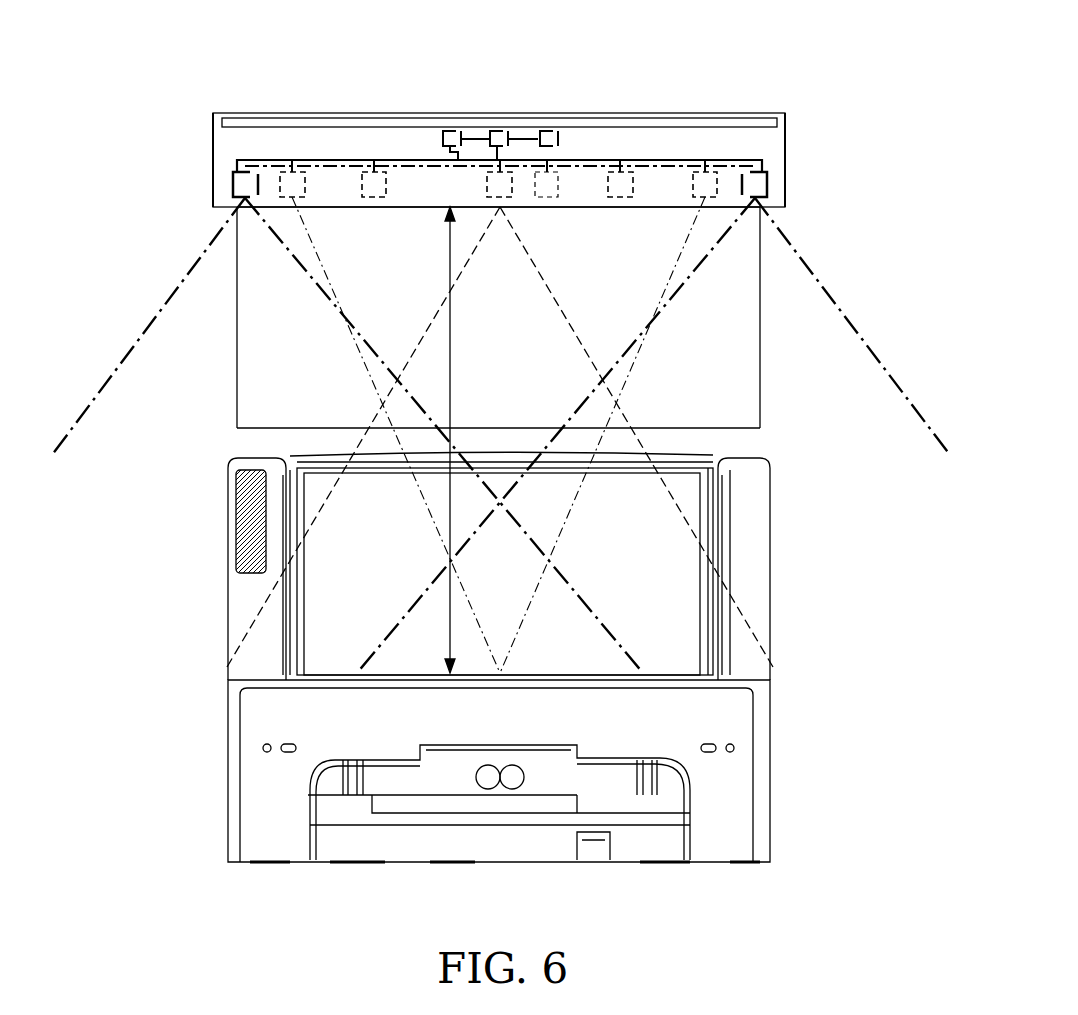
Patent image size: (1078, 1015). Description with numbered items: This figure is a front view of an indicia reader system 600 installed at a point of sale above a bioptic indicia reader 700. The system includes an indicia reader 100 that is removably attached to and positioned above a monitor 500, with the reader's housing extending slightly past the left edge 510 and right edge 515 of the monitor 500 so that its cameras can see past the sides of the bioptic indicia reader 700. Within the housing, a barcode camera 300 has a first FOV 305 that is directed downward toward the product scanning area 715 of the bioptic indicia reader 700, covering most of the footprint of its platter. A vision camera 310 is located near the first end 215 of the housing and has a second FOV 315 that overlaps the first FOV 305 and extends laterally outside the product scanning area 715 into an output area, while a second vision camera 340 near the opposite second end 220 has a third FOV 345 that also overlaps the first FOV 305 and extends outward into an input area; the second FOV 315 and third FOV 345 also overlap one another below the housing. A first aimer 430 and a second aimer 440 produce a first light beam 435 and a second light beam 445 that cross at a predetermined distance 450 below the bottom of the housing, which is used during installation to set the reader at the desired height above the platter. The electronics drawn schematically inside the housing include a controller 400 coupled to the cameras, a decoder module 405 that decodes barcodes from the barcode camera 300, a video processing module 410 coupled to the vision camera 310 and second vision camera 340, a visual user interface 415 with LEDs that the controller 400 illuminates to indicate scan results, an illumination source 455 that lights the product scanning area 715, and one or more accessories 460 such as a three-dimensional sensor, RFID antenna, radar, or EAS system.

The indicia reader 100 is at (205, 148).
The first end 215 is at (213, 100).
The second end 220 is at (775, 100).
The barcode camera 300 is at (497, 208).
The first FOV 305 is at (574, 293).
The vision camera 310 is at (222, 186).
The second FOV 315 is at (120, 340).
The second vision camera 340 is at (767, 183).
The third FOV 345 is at (860, 315).
The controller 400 is at (495, 131).
The decoder module 405 is at (446, 131).
The video processing module 410 is at (545, 131).
The visual user interface 415 is at (598, 122).
The first aimer 430 is at (296, 172).
The first light beam 435 is at (346, 279).
The second aimer 440 is at (705, 190).
The second light beam 445 is at (661, 348).
The predetermined distance 450 is at (453, 385).
The illumination source 455 is at (548, 187).
The accessory 460 is at (374, 172).
The monitor 500 is at (226, 385).
The left edge 510 is at (237, 345).
The right edge 515 is at (762, 385).
The indicia reader system 600 is at (121, 254).
The bioptic indicia reader 700 is at (208, 552).
The product scanning area 715 is at (524, 588).